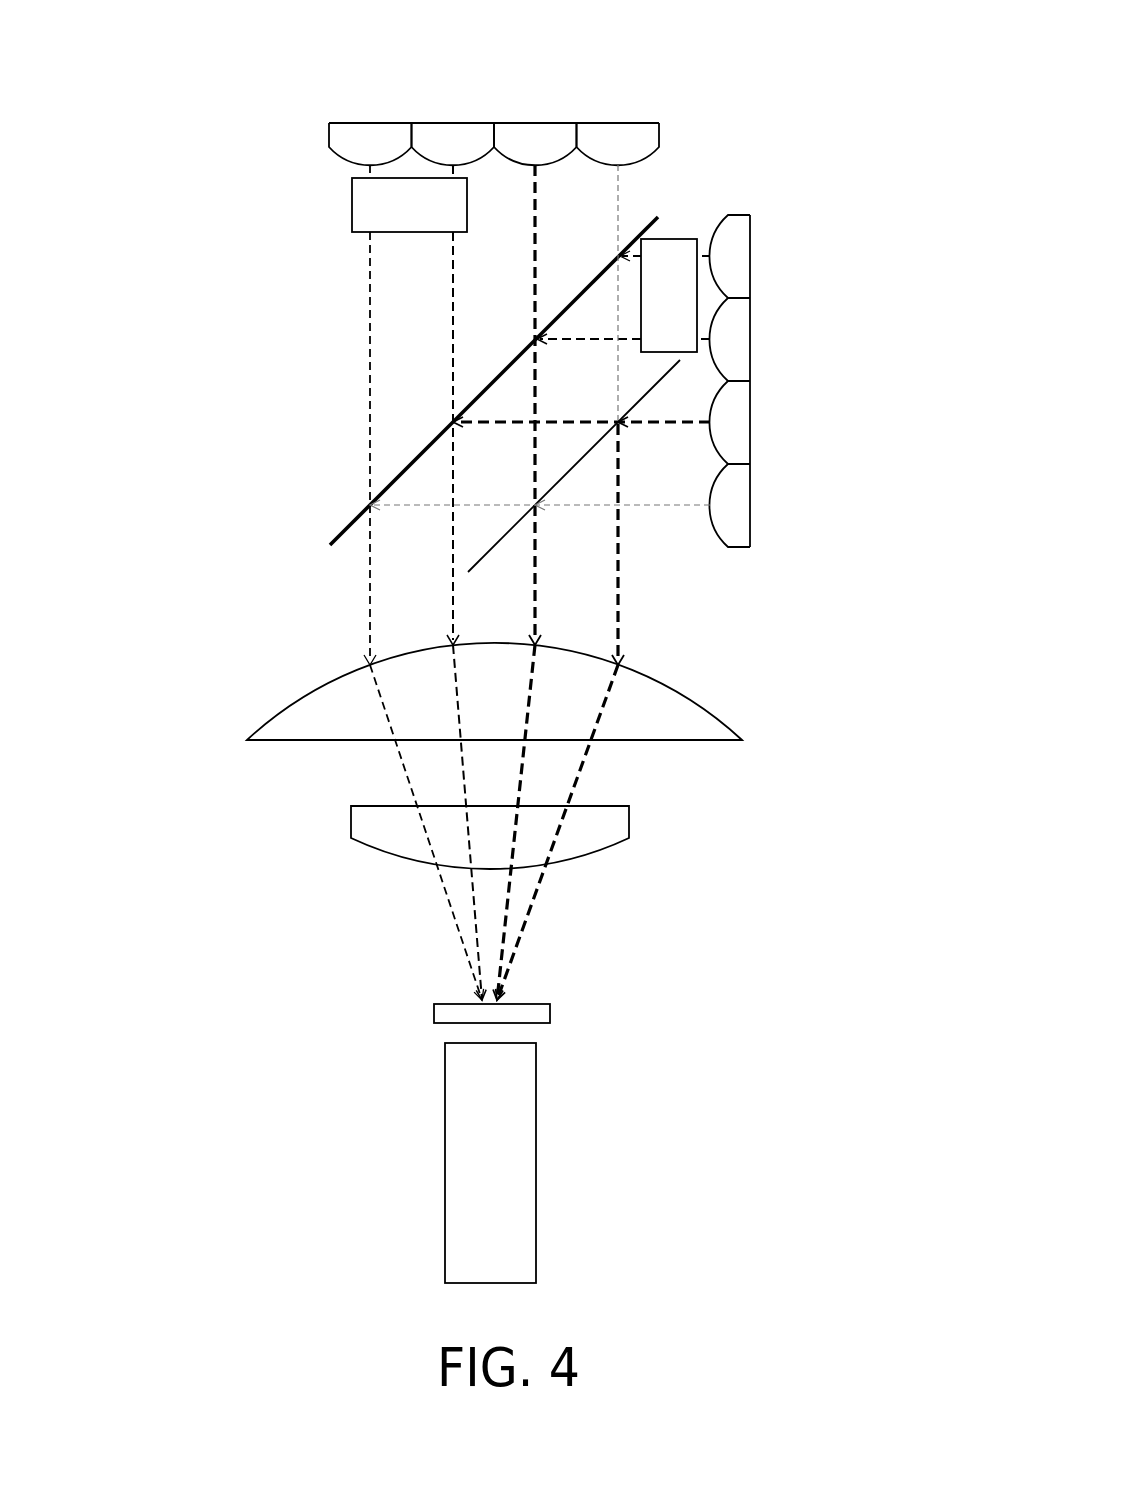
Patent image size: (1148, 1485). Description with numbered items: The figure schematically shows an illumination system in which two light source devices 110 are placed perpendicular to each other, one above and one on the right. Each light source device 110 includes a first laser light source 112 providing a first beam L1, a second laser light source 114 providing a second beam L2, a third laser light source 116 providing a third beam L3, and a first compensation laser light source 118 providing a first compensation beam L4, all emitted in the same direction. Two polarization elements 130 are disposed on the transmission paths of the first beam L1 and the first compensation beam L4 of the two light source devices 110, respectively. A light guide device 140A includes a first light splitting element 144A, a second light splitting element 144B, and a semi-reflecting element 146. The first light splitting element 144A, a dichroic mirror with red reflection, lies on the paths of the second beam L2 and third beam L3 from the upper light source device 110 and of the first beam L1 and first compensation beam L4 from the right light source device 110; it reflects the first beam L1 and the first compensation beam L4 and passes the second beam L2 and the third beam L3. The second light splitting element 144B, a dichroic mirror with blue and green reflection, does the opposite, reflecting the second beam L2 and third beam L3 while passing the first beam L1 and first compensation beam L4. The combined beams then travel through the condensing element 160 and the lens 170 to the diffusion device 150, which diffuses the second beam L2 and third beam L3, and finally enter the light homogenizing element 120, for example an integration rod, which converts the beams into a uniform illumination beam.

The light source device 110 is at (592, 57).
The first laser light source 112 is at (450, 136).
The second laser light source 114 is at (538, 136).
The third laser light source 116 is at (617, 136).
The first compensation laser light source 118 is at (370, 136).
The light homogenizing element 120 is at (525, 1172).
The polarization element 130 is at (365, 208).
The light guide device 140A is at (158, 112).
The first light splitting element 144A is at (745, 141).
The second light splitting element 144B is at (348, 524).
The semi-reflecting element 146 is at (487, 548).
The diffusion device 150 is at (434, 1012).
The condensing element 160 is at (293, 720).
The lens 170 is at (355, 822).
The first beam L1 is at (451, 282).
The second beam L2 is at (534, 265).
The third beam L3 is at (617, 213).
The first compensation beam L4 is at (367, 281).